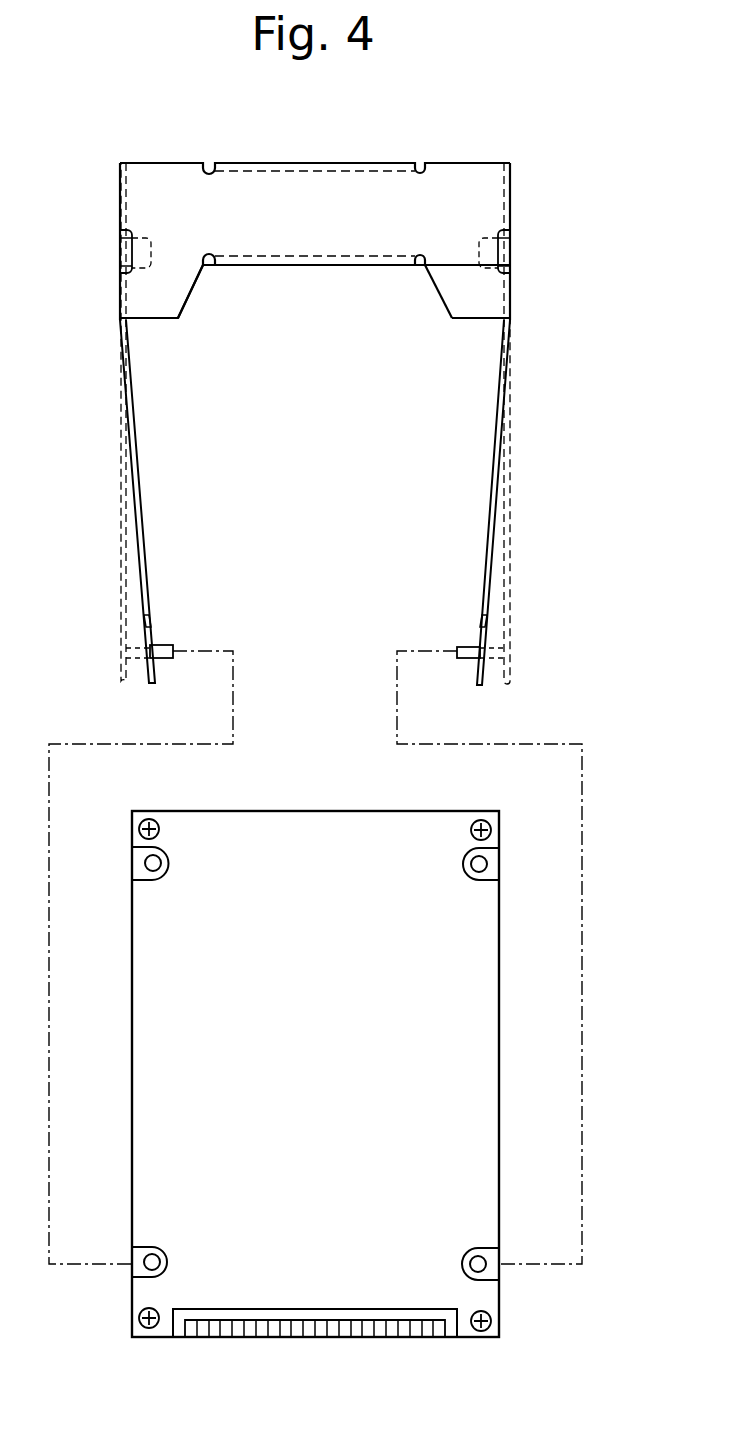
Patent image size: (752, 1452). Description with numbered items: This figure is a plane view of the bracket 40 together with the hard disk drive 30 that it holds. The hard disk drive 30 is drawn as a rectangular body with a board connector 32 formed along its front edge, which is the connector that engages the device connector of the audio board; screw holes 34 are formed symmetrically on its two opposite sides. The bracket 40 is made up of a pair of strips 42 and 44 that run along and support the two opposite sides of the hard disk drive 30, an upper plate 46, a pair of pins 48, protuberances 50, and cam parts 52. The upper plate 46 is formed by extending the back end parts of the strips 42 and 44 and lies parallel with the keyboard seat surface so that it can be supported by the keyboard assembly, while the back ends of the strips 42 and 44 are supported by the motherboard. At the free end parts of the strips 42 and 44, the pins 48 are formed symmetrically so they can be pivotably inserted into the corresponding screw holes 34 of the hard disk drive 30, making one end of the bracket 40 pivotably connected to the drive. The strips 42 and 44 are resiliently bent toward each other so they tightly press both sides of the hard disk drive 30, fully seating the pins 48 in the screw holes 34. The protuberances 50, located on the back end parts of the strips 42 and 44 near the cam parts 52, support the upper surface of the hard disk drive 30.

The hard disk drive 30 is at (307, 803).
The board connector 32 is at (303, 1312).
The screw holes 34 is at (103, 1264).
The bracket 40 is at (557, 244).
The strip 42 is at (137, 498).
The strip 44 is at (492, 499).
The upper plate 46 is at (310, 245).
The pins 48 is at (462, 648).
The protuberances 50 is at (143, 268).
The cam parts 52 is at (483, 635).